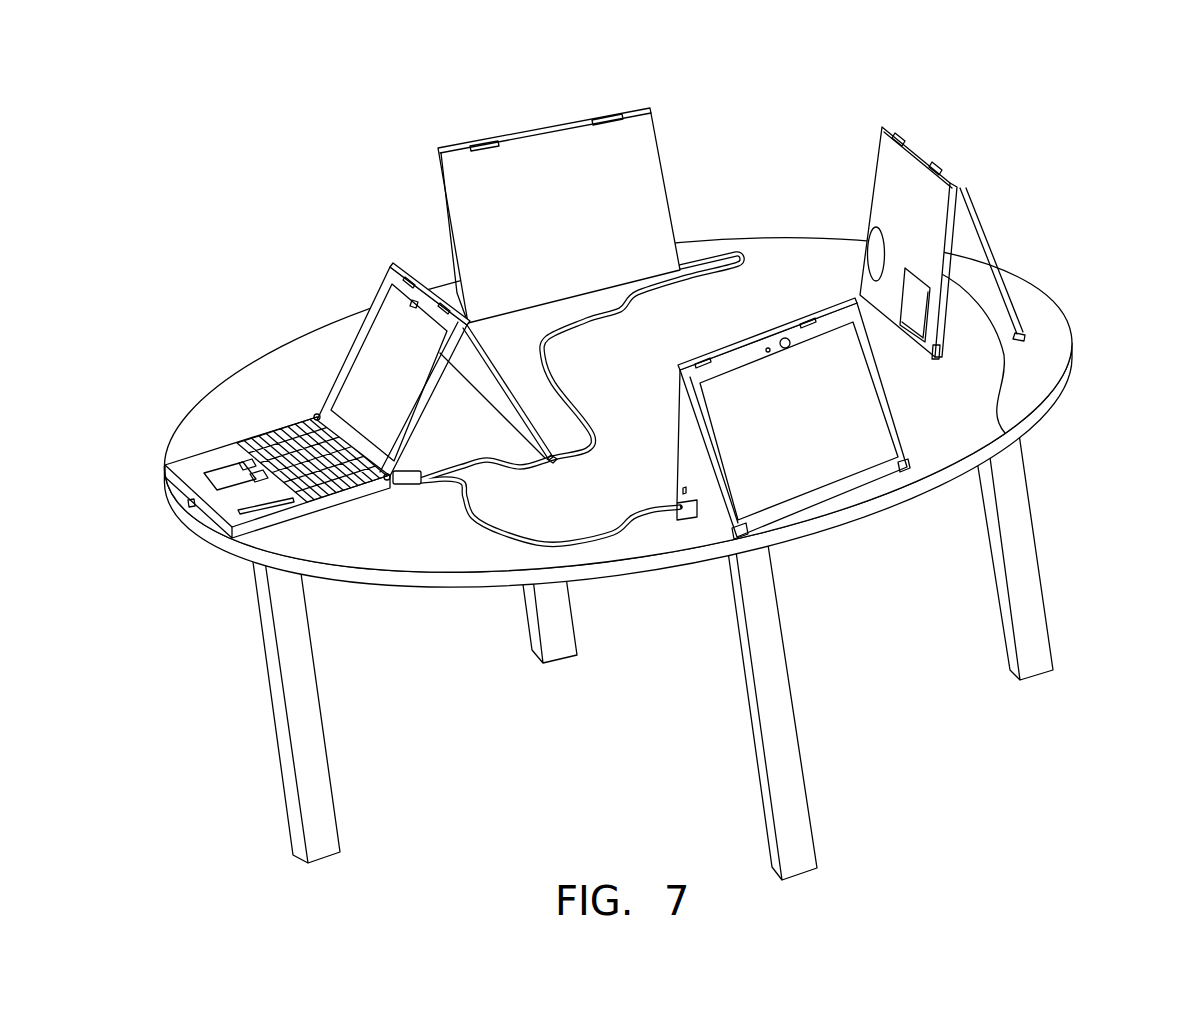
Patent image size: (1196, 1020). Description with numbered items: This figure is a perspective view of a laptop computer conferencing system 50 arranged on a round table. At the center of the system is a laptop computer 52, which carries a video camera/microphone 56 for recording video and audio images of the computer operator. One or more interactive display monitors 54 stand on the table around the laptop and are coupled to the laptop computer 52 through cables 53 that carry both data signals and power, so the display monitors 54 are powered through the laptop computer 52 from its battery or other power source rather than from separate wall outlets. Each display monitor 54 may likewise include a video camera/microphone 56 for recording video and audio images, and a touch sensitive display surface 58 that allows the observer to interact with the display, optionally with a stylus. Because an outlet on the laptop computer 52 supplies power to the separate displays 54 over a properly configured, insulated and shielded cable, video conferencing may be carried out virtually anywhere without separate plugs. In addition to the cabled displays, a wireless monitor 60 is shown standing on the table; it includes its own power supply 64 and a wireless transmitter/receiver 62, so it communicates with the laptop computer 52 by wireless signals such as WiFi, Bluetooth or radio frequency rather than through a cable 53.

The laptop computer conferencing system 50 is at (817, 110).
The laptop computer 52 is at (285, 413).
The cables 53 is at (520, 467).
The interactive display monitor 54 is at (572, 113).
The video camera/microphone 56 is at (388, 262).
The touch sensitive display surface 58 is at (828, 425).
The wireless monitor 60 is at (913, 190).
The wireless transmitter/receiver 62 is at (876, 254).
The power supply 64 is at (1005, 433).